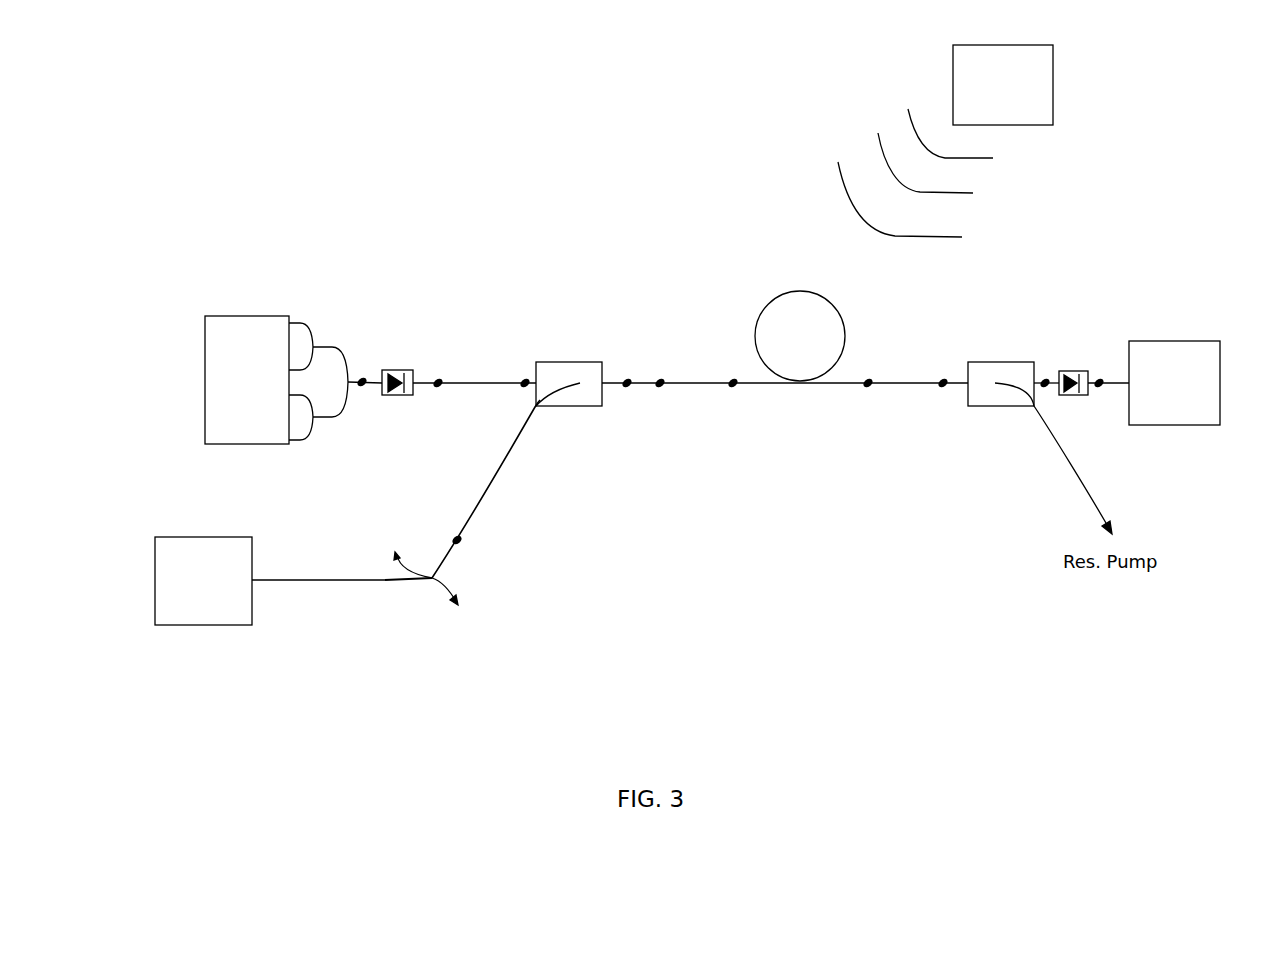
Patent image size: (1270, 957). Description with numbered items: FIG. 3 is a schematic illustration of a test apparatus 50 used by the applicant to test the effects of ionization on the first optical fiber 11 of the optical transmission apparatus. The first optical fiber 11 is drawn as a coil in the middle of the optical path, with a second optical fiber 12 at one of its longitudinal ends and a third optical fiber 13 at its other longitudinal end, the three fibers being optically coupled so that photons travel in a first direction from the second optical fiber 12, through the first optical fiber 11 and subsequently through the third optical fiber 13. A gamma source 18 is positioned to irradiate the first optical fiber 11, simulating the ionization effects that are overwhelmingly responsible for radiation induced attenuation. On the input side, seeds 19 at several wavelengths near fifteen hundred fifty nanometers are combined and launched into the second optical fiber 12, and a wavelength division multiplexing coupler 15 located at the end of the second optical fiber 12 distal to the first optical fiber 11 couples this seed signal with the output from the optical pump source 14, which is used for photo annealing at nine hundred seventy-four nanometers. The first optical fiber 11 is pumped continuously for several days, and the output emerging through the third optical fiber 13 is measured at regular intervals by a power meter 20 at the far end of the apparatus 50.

The first optical fiber 11 is at (783, 294).
The second optical fiber 12 is at (708, 384).
The third optical fiber 13 is at (913, 384).
The optical pump source 14 is at (198, 615).
The wavelength division multiplexing coupler 15 is at (563, 362).
The gamma source 18 is at (1053, 70).
The seeds 19 is at (205, 350).
The power meter 20 is at (1167, 353).
The test apparatus 50 is at (462, 167).